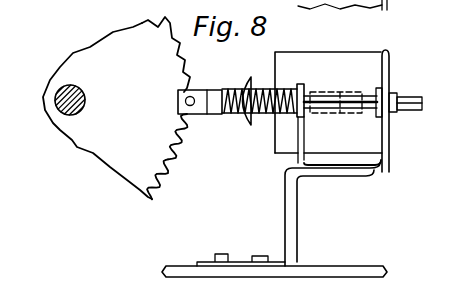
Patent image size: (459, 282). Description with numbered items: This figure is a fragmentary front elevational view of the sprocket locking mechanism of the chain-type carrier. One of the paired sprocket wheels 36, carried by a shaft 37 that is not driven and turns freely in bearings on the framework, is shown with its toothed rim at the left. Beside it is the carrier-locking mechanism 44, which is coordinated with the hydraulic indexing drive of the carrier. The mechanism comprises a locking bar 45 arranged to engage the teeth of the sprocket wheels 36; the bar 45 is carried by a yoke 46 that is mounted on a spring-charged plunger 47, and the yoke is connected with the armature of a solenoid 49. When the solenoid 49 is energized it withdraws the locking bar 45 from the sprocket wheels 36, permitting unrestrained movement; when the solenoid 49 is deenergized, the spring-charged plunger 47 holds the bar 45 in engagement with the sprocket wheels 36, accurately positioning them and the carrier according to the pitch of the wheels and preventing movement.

The sprocket wheel 36 is at (137, 162).
The shaft 37 is at (53, 113).
The carrier-locking mechanism 44 is at (377, 193).
The locking bar 45 is at (184, 100).
The yoke 46 is at (210, 114).
The spring-charged plunger 47 is at (322, 110).
The solenoid 49 is at (345, 62).